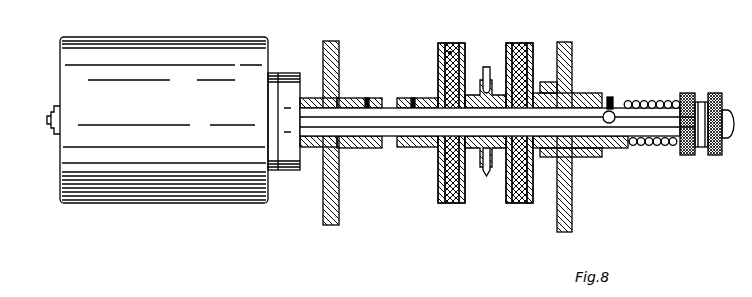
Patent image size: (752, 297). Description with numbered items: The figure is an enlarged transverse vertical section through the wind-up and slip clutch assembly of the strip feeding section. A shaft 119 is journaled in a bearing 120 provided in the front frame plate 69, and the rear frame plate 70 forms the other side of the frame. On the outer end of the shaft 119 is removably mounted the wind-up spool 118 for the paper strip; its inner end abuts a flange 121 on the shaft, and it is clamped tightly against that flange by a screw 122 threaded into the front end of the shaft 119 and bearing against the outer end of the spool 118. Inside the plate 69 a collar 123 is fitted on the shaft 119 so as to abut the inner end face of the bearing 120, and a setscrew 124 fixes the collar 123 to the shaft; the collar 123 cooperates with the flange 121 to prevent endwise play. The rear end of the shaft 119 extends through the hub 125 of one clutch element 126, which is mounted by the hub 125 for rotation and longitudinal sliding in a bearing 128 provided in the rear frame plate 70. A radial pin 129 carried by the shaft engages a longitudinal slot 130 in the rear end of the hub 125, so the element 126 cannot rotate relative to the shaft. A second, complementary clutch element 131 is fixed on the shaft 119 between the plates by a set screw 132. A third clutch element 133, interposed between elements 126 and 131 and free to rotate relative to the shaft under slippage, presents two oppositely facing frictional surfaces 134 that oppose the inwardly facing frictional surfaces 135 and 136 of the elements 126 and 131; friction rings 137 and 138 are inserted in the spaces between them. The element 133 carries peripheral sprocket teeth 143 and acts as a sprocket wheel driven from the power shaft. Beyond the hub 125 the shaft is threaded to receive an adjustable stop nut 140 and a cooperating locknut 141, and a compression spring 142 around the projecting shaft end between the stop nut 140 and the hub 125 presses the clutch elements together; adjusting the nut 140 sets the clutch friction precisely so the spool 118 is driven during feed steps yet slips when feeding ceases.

The spool 118 is at (138, 203).
The screw 122 is at (54, 124).
The flange 121 is at (290, 172).
The front frame plate 69 is at (326, 50).
The bearing 120 is at (345, 100).
The collar 123 is at (370, 148).
The setscrew 124 is at (367, 99).
The set screw 132 is at (413, 100).
The shaft 119 is at (388, 136).
The friction ring 138 is at (438, 142).
The second clutch element 131 is at (439, 172).
The frictional surfaces 134 is at (452, 45).
The frictional surface 136 is at (450, 52).
The sprocket teeth 143 is at (487, 68).
The third clutch element 133 is at (506, 195).
The friction ring 137 is at (532, 142).
The clutch element 126 is at (528, 178).
The hub 125 is at (588, 93).
The frictional surface 135 is at (535, 60).
The bearing 128 is at (573, 157).
The rear frame plate 70 is at (572, 53).
The radial pin 129 is at (610, 97).
The longitudinal slot 130 is at (630, 100).
The compression spring 142 is at (654, 147).
The adjustable stop nut 140 is at (689, 93).
The locknut 141 is at (715, 93).